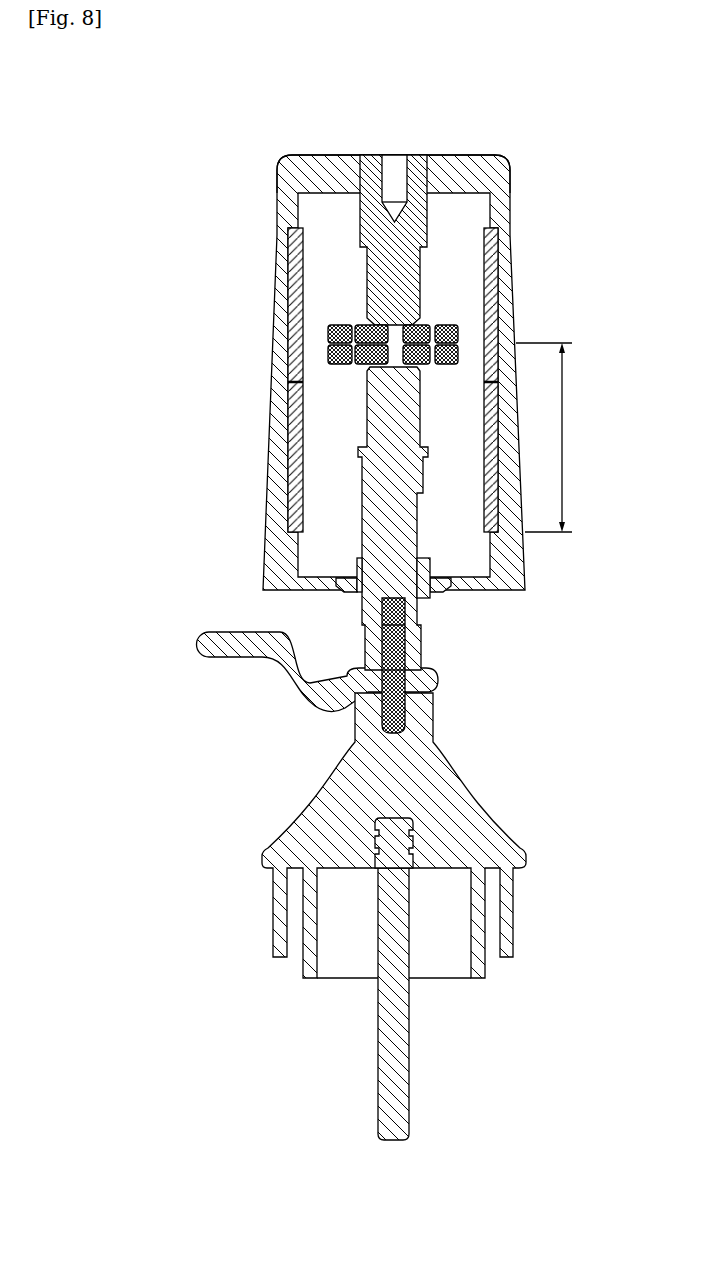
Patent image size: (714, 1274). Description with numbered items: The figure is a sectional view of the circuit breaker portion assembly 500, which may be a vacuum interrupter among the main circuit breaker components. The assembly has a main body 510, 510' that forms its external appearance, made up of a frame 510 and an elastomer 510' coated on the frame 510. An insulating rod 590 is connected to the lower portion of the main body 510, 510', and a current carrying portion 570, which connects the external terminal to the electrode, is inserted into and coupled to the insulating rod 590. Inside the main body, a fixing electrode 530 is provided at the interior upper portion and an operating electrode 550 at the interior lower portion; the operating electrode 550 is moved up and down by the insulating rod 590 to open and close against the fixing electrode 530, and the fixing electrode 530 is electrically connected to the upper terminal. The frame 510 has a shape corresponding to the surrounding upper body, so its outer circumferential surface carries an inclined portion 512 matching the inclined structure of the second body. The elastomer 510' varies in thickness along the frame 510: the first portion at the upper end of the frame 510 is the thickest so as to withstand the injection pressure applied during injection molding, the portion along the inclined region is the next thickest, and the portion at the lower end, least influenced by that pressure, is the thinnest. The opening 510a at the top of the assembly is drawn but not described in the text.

The circuit breaker portion assembly 500 is at (243, 100).
The frame 510 is at (428, 373).
The elastomer 510' is at (436, 163).
The screw hole 510a is at (394, 166).
The inclined portion 512 is at (563, 437).
The fixing electrode 530 is at (390, 272).
The operating electrode 550 is at (385, 475).
The current carrying portion 570 is at (198, 642).
The insulating rod 590 is at (250, 860).